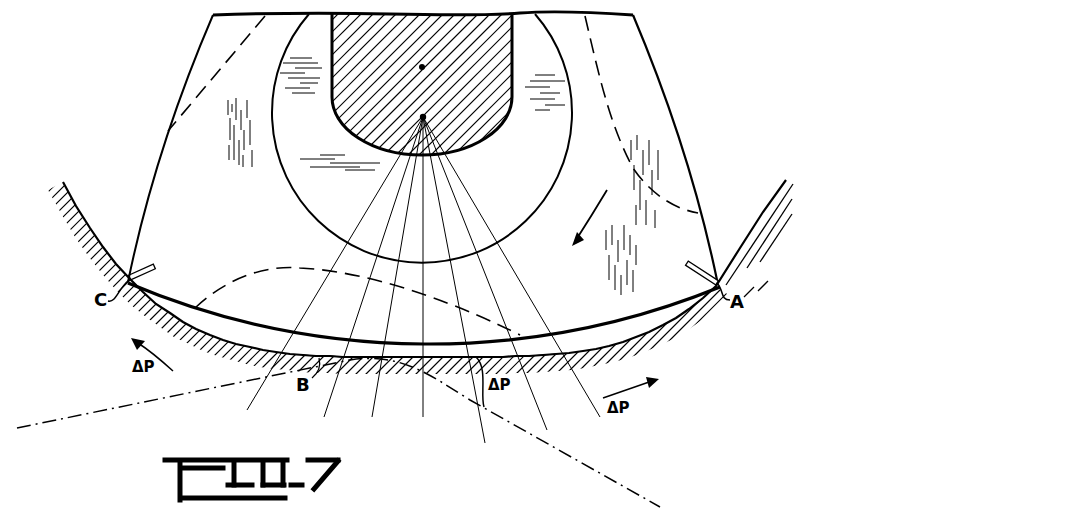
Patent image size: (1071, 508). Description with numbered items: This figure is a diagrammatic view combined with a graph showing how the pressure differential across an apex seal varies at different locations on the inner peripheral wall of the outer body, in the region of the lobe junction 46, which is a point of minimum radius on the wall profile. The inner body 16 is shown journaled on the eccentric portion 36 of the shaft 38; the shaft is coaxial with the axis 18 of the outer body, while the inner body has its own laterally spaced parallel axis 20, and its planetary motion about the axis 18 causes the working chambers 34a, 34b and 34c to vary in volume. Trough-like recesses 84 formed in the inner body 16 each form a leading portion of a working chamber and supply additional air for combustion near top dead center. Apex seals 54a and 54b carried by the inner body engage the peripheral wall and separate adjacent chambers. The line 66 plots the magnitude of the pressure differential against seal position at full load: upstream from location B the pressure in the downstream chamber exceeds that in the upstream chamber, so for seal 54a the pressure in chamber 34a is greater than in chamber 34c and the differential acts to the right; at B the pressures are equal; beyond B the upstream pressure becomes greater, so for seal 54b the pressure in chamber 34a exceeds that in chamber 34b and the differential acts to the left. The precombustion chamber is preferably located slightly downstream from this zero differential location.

The inner body 16 is at (660, 82).
The axis of the outer body 18 is at (422, 66).
The axis of the inner body 20 is at (423, 116).
The working chamber 34a is at (617, 316).
The working chamber 34b is at (121, 181).
The working chamber 34c is at (755, 197).
The eccentric portion of the shaft 36 is at (507, 190).
The shaft 38 is at (497, 122).
The lobe junction 46 is at (416, 357).
The apex seal 54a is at (709, 264).
The apex seal 54b is at (149, 267).
The line 66 is at (607, 448).
The trough-like recess 84 is at (312, 265).